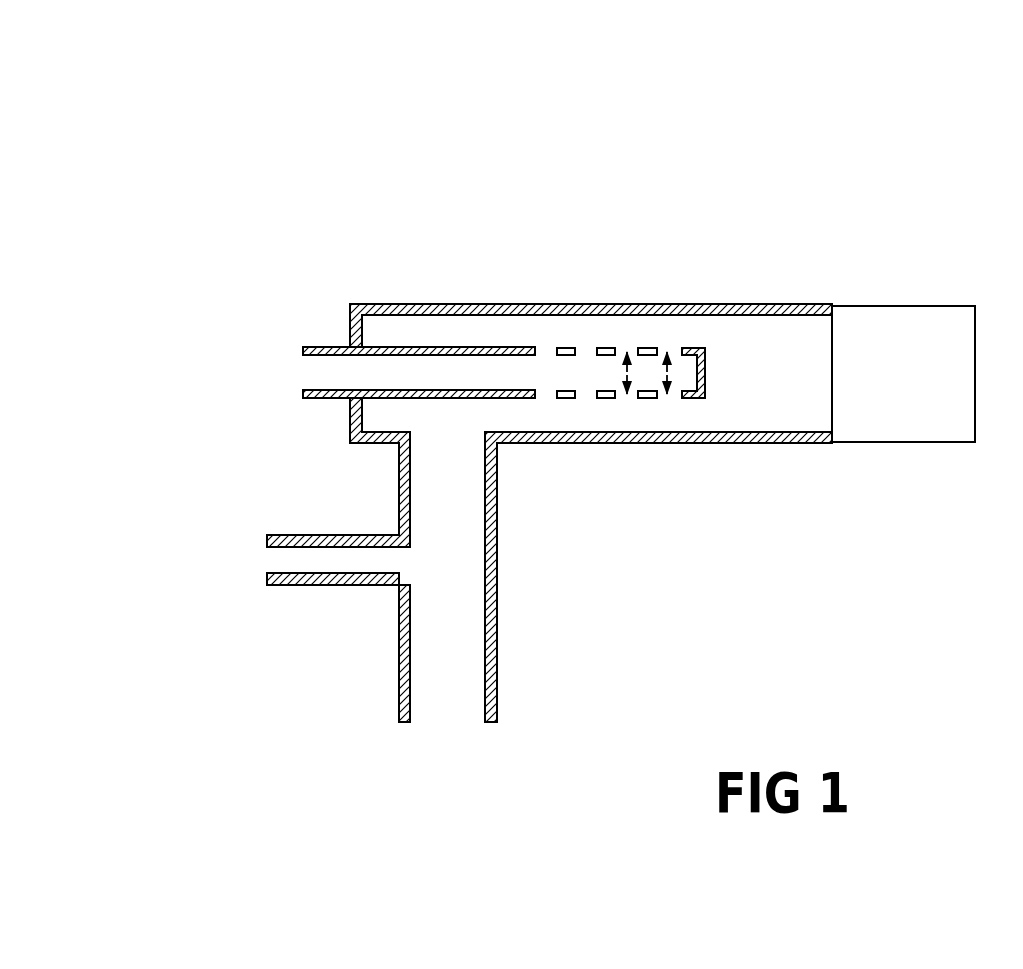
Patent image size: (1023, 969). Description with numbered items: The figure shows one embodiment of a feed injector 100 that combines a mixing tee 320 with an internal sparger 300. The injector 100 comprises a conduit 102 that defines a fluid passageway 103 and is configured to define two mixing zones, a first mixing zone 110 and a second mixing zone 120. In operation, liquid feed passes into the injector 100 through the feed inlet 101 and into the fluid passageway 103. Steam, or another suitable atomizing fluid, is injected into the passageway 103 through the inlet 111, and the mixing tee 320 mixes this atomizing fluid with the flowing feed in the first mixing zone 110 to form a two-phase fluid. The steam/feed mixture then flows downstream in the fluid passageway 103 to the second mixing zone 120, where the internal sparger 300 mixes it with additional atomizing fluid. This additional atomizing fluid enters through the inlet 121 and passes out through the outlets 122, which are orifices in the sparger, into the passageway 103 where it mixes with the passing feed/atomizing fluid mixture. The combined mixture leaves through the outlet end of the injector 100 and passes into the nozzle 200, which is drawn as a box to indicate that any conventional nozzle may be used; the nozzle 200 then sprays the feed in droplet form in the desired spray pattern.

The feed injector 100 is at (688, 145).
The feed inlet 101 is at (451, 727).
The conduit 102 is at (661, 450).
The fluid passageway 103 is at (478, 472).
The first mixing zone 110 is at (463, 546).
The inlet 111 is at (261, 560).
The second mixing zone 120 is at (634, 330).
The inlet 121 is at (297, 375).
The outlets 122 is at (585, 347).
The nozzle 200 is at (880, 306).
The internal sparger 300 is at (424, 342).
The mixing tee 320 is at (388, 520).